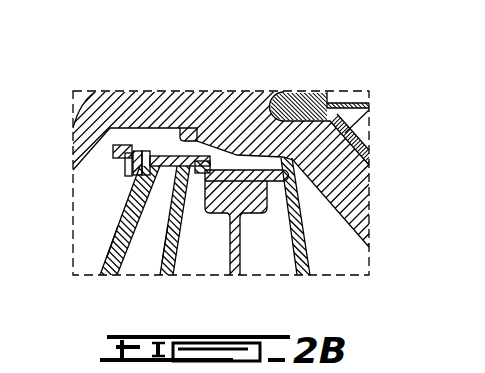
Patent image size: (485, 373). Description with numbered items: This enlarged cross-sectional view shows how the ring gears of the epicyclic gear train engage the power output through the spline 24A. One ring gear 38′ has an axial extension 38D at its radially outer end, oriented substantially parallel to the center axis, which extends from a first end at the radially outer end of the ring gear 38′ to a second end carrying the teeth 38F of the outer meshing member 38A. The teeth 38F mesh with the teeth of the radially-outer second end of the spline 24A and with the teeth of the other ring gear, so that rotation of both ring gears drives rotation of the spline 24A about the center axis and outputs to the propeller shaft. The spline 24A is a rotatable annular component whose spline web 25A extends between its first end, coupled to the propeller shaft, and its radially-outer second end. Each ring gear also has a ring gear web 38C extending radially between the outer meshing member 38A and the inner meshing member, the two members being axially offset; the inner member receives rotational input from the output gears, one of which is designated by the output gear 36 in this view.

The teeth 38F is at (128, 145).
The axial extension 38D is at (170, 152).
The outer meshing member 38A is at (193, 125).
The seal 36 is at (230, 263).
The spline 24A is at (125, 218).
The spline web 25A is at (107, 257).
The ring gear 38′ is at (307, 257).
The ring gear web 38C is at (190, 240).